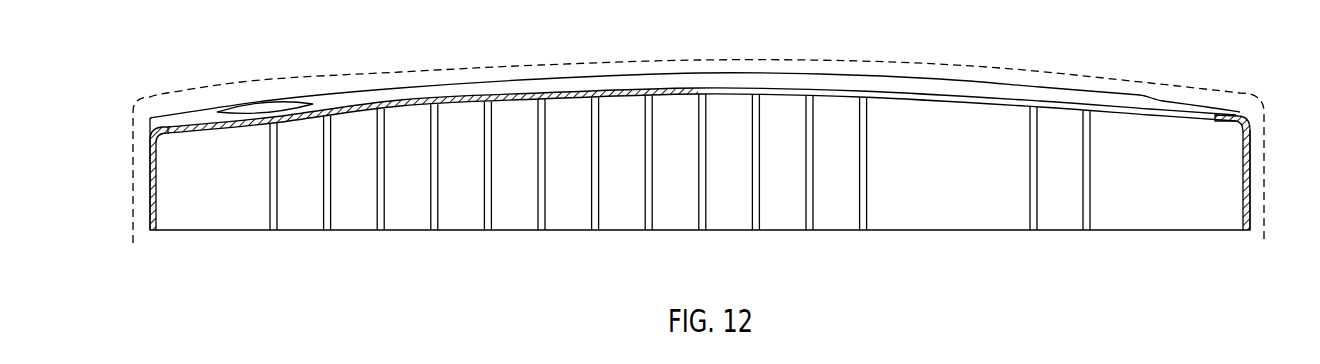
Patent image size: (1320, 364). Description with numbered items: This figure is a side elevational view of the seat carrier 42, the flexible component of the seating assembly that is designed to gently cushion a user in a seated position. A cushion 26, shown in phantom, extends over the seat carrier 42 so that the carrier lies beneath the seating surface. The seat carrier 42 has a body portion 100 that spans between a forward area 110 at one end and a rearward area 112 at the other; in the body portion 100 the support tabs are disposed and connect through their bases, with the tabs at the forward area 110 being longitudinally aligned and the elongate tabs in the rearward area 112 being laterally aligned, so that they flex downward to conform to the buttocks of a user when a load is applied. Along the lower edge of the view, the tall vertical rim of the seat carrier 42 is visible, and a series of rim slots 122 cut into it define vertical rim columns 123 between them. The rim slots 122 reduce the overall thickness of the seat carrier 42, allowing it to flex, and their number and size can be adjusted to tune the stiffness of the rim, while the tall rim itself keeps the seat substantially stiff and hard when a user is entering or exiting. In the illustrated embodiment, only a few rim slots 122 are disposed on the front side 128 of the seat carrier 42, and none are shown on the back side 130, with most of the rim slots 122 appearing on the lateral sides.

The cushion 26 is at (262, 81).
The seat carrier 42 is at (1158, 92).
The body portion 100 is at (383, 99).
The forward area 110 is at (170, 124).
The rearward area 112 is at (1247, 109).
The rim slots 122 is at (273, 231).
The vertical rim columns 123 is at (1071, 206).
The front side 128 is at (150, 166).
The back side 130 is at (1250, 162).